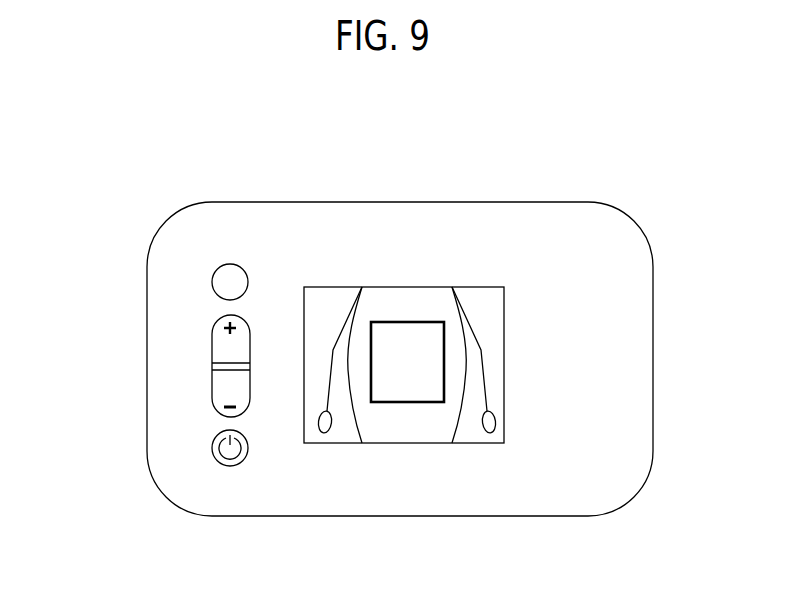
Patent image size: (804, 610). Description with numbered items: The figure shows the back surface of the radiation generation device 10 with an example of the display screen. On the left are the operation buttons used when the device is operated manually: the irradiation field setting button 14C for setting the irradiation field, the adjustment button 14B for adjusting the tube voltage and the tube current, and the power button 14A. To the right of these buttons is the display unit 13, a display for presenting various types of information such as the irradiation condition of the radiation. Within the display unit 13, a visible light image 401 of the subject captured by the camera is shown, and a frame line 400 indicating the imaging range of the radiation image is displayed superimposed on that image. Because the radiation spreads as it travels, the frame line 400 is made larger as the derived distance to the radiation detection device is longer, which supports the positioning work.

The radiation generation device 10 is at (408, 202).
The display unit 13 is at (504, 358).
The power button 14A is at (212, 449).
The adjustment button 14B is at (212, 365).
The irradiation field setting button 14C is at (212, 282).
The frame line 400 is at (410, 403).
The visible light image 401 is at (458, 423).